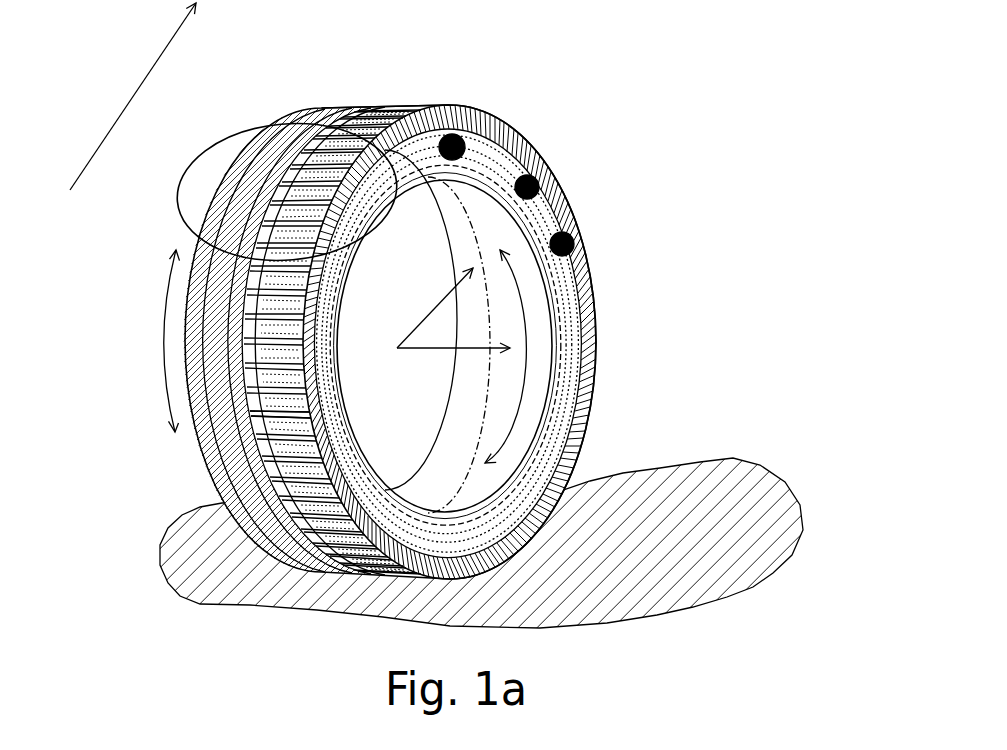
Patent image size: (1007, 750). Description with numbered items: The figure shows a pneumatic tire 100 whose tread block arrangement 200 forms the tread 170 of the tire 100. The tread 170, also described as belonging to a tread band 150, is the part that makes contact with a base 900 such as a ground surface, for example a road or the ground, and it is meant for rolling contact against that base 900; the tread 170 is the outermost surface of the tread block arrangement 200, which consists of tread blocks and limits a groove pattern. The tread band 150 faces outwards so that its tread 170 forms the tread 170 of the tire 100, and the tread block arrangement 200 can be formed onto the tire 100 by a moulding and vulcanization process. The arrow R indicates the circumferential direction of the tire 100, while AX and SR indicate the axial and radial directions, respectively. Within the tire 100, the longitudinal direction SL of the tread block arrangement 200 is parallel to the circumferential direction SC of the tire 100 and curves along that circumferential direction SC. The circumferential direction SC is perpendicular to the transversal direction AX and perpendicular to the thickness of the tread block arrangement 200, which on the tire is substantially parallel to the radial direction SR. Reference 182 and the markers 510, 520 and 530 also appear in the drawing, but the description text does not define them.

The pneumatic tire 100 is at (597, 332).
The tread band 150 is at (452, 110).
The tread 170 is at (366, 98).
The tread groove 182 is at (257, 430).
The tread block arrangement 200 is at (197, 166).
The first sensor 510 is at (466, 150).
The second sensor 520 is at (540, 187).
The third sensor 530 is at (575, 245).
The base 900 is at (691, 548).
The longitudinal direction SL is at (128, 96).
The circumferential direction SC is at (140, 341).
The radial direction SR is at (436, 308).
The axial direction AX is at (453, 363).
The circumferential direction arrow R is at (523, 388).